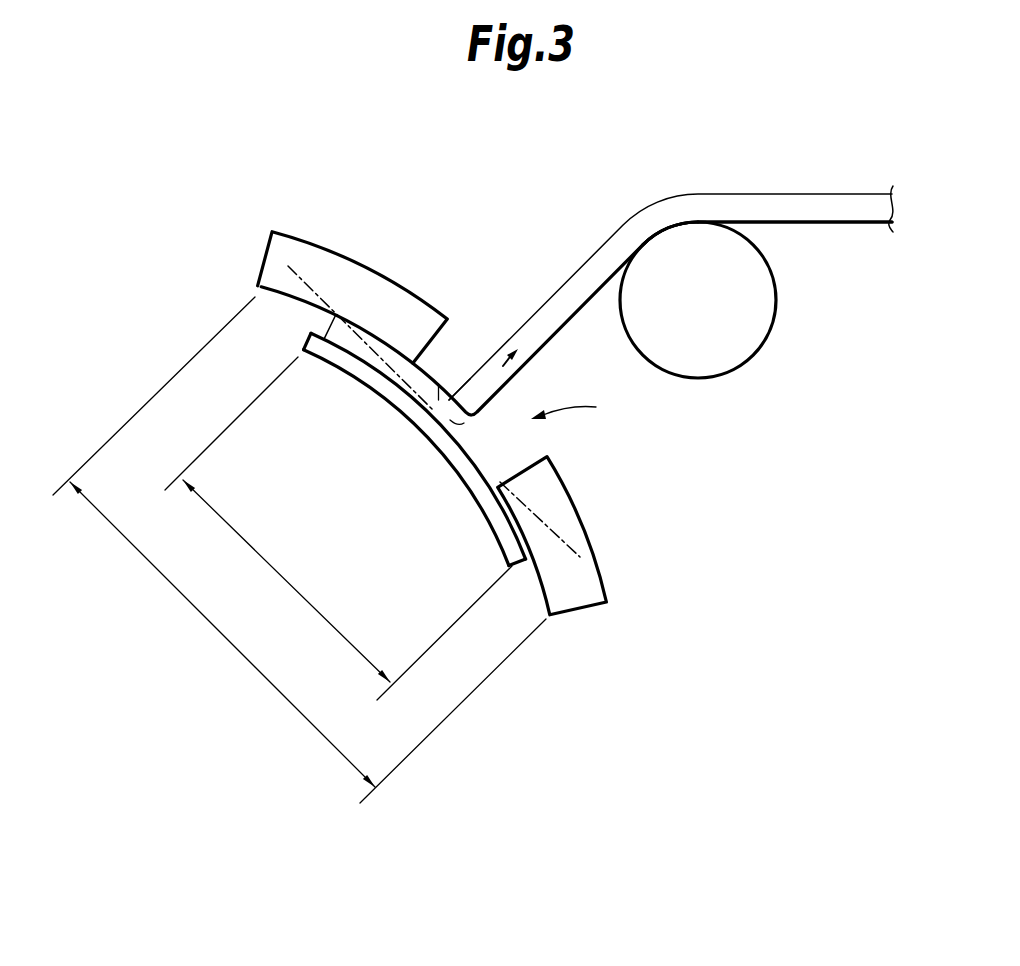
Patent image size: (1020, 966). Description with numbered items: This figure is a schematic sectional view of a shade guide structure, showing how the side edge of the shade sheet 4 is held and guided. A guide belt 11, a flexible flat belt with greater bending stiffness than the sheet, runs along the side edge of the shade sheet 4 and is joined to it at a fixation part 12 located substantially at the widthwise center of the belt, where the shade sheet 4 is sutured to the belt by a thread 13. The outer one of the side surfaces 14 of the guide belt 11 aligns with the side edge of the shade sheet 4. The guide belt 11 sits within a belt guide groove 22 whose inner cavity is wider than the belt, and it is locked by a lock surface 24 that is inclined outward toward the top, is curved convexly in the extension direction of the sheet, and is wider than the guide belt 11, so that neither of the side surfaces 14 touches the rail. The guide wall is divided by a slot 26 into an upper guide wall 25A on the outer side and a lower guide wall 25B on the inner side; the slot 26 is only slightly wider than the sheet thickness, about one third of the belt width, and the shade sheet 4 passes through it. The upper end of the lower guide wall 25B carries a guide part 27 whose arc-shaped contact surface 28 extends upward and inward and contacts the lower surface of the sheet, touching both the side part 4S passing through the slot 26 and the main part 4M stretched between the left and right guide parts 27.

The shade sheet 4 is at (736, 186).
The main part of the shade sheet 4M is at (835, 204).
The side part of the shade sheet 4S is at (566, 291).
The guide belt 11 is at (488, 497).
The fixation part 12 is at (456, 437).
The thread 13 is at (441, 387).
The side surfaces of the guide belt 14 is at (306, 339).
The belt guide groove 22 is at (372, 508).
The lock surface 24 is at (384, 499).
The upper guide wall 25A is at (366, 280).
The lower guide wall 25B is at (594, 594).
The slot 26 is at (585, 406).
The guide part 27 is at (760, 300).
The contact surface 28 is at (661, 227).